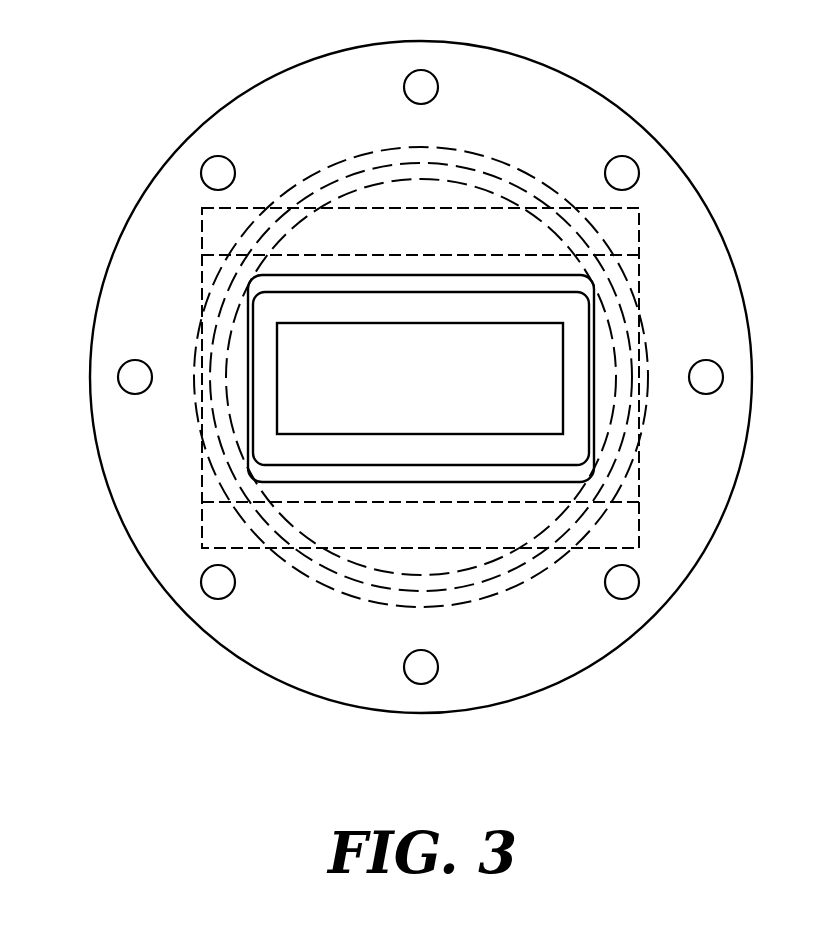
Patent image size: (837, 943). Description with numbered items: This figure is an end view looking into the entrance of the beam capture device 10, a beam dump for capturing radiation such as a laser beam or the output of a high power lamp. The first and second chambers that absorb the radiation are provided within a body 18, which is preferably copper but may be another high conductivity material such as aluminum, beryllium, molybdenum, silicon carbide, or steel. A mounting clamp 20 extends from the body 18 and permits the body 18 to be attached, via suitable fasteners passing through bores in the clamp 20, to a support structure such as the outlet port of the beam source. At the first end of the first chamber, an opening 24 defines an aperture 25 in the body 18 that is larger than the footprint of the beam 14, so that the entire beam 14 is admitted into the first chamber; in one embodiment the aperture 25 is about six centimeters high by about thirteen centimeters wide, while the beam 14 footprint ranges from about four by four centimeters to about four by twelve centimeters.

The beam capture device 10 is at (454, 400).
The beam 14 is at (491, 445).
The body 18 is at (628, 490).
The mounting clamp 20 is at (353, 650).
The opening 24 is at (478, 476).
The aperture 25 is at (357, 463).